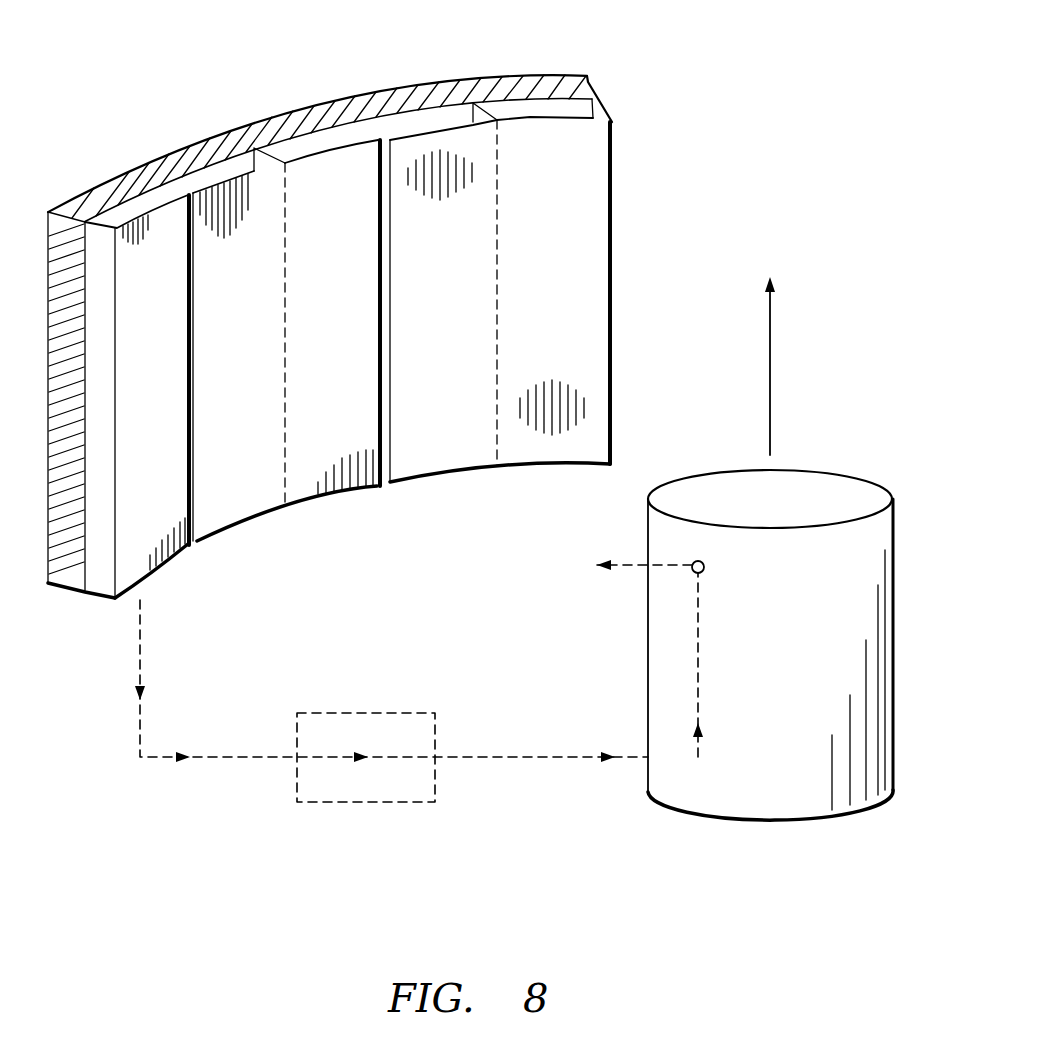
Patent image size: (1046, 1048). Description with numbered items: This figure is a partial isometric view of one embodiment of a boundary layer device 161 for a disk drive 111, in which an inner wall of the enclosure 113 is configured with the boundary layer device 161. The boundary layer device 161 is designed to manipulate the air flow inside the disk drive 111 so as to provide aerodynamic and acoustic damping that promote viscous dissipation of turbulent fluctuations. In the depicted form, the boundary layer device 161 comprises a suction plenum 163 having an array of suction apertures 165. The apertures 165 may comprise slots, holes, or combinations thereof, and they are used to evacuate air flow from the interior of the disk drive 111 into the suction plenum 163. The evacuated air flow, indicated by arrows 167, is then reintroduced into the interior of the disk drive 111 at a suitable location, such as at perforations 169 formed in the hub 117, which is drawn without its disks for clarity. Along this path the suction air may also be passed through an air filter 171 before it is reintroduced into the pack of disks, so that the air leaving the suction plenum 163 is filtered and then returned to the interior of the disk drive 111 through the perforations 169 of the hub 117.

The disk drive 111 is at (826, 85).
The enclosure 113 is at (66, 578).
The hub 117 is at (753, 822).
The boundary layer device 161 is at (350, 575).
The suction plenum 163 is at (180, 190).
The suction apertures 165 is at (392, 305).
The air flow 167 is at (163, 758).
The perforations 169 is at (708, 570).
The air filter 171 is at (370, 803).